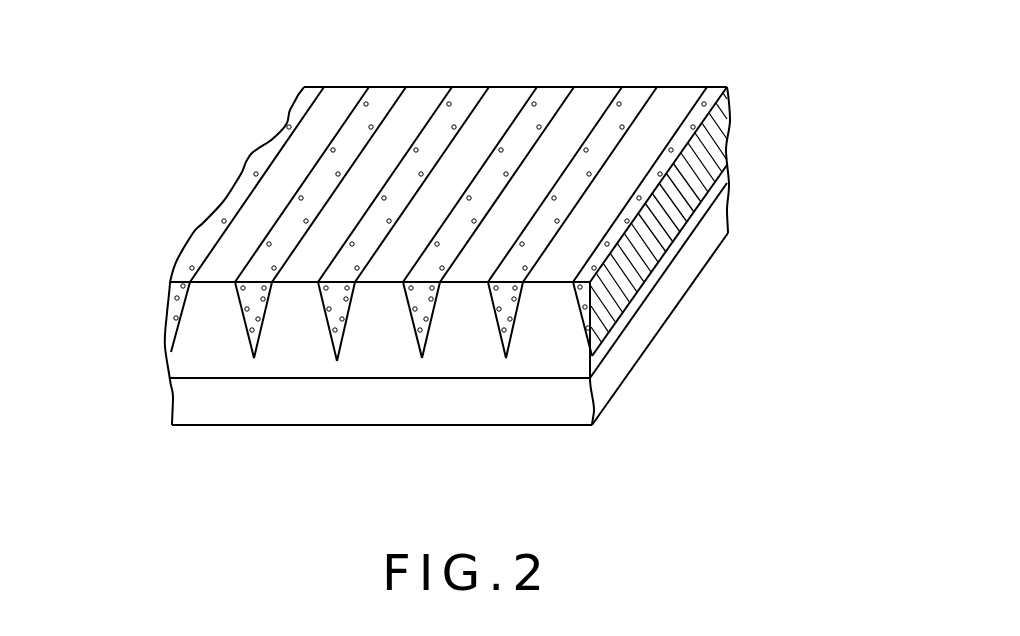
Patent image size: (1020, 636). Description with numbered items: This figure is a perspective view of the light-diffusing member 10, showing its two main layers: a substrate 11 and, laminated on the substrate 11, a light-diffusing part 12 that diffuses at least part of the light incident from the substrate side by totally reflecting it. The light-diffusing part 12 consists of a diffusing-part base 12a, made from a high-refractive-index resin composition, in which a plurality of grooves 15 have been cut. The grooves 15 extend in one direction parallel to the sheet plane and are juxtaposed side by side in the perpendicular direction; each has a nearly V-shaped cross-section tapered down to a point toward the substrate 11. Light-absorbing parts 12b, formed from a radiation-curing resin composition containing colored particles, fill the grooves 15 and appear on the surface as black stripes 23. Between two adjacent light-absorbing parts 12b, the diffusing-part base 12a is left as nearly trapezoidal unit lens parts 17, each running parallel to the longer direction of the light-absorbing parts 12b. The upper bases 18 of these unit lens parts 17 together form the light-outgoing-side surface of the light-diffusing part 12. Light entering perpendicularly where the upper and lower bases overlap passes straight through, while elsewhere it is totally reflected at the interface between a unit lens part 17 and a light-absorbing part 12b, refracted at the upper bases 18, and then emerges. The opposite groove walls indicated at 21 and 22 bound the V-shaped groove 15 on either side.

The light-diffusing member 10 is at (195, 230).
The substrate 11 is at (228, 403).
The light-diffusing part 12 is at (557, 352).
The diffusing-part base 12a is at (533, 368).
The light-absorbing part 12b is at (433, 320).
The groove 15 is at (338, 362).
The unit lens part 17 is at (470, 333).
The upper base 18 is at (425, 100).
The first groove side wall 21 is at (322, 300).
The second groove side wall 22 is at (353, 302).
The black stripe 23 is at (463, 98).